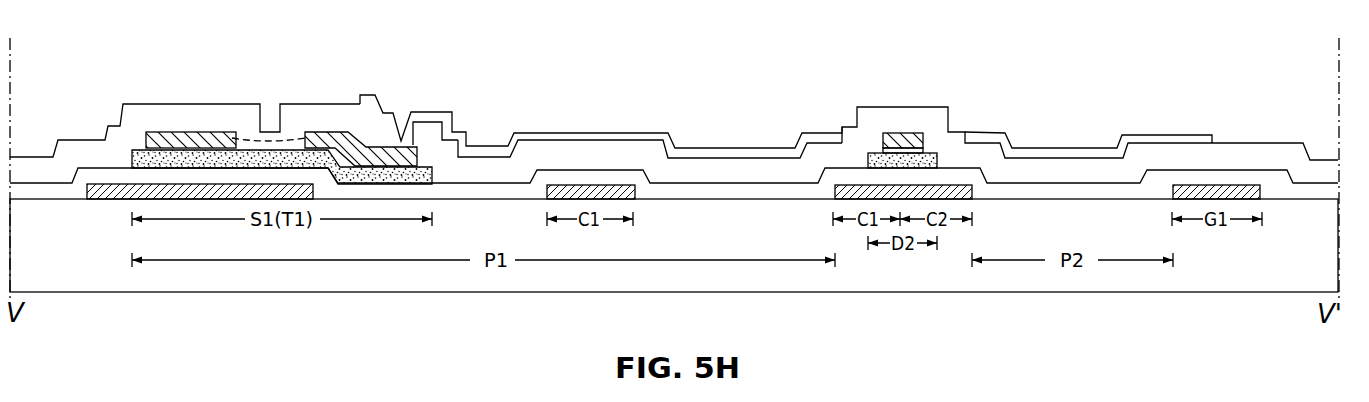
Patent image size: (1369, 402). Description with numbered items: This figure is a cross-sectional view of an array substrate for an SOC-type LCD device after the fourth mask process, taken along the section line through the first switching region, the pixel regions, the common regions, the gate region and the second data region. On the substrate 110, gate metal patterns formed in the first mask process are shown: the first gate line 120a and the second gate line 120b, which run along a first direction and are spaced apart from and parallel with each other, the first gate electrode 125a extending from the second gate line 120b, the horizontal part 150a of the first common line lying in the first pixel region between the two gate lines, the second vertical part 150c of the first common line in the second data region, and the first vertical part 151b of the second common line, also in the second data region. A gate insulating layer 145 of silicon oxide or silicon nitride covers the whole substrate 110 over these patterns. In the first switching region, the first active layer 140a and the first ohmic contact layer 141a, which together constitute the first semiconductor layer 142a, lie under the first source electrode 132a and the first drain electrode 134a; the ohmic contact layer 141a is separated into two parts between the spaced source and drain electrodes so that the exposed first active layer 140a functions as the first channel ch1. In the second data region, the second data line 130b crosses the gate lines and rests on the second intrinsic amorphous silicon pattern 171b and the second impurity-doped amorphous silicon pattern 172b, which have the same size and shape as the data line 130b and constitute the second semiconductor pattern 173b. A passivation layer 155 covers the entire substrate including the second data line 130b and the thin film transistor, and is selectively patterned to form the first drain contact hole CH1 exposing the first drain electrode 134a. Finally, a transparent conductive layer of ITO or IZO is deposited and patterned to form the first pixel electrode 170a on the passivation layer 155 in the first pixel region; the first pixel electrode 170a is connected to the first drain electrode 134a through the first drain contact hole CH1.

The substrate 110 is at (1329, 281).
The first gate line 120a is at (1210, 190).
The second gate line 120b is at (115, 183).
The first gate electrode 125a is at (301, 182).
The first source electrode 132a is at (186, 132).
The first drain electrode 134a is at (362, 150).
The first channel ch1 is at (265, 124).
The first drain contact hole CH1 is at (404, 130).
The first active layer 140a is at (420, 177).
The first ohmic contact layer 141a is at (432, 145).
The first semiconductor layer 142a is at (532, 100).
The gate insulating layer 145 is at (732, 196).
The horizontal part of the first common line 150a is at (593, 190).
The second vertical part of the first common line 150c is at (848, 188).
The first vertical part of the second common line 151b is at (968, 186).
The passivation layer 155 is at (695, 172).
The first pixel electrode 170a is at (650, 135).
The second data line 130b is at (890, 133).
The second intrinsic amorphous silicon pattern 171b is at (924, 158).
The second impurity-doped amorphous silicon pattern 172b is at (925, 140).
The second semiconductor pattern 173b is at (1023, 100).